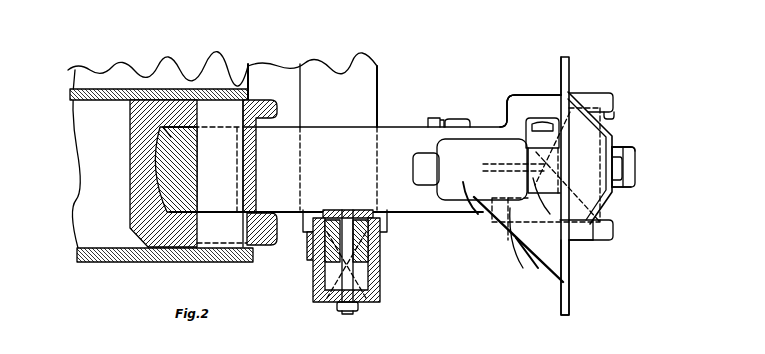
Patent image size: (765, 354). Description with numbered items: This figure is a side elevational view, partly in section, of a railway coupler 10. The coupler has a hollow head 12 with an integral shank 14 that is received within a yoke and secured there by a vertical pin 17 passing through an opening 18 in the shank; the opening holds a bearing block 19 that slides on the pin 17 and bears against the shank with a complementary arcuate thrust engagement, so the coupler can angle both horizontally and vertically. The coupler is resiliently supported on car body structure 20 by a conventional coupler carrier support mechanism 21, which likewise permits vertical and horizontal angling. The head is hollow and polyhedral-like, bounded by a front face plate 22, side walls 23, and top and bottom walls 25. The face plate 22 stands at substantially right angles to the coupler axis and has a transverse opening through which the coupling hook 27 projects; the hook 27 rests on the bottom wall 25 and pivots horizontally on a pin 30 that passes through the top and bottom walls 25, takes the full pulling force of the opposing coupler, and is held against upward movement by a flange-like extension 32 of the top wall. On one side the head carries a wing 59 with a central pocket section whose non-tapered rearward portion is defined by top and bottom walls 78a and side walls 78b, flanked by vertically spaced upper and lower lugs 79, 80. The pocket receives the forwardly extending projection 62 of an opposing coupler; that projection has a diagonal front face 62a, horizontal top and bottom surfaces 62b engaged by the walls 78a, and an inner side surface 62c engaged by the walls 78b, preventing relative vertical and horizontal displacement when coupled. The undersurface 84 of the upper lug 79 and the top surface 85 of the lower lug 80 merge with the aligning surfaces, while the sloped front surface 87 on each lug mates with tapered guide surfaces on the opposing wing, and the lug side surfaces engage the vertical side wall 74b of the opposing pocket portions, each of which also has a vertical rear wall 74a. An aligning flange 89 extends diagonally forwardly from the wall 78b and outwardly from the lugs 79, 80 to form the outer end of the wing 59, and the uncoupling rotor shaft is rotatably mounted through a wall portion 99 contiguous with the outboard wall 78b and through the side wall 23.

The coupler 10 is at (546, 64).
The hollow head 12 is at (492, 210).
The shank 14 is at (388, 128).
The vertical pin 17 is at (213, 108).
The opening 18 is at (256, 204).
The bearing block 19 is at (160, 246).
The car body structure 20 is at (377, 82).
The coupler carrier support mechanism 21 is at (382, 278).
The front face plate 22 is at (566, 71).
The side walls 23 is at (467, 200).
The top and bottom walls 25 is at (535, 86).
The coupling hook 27 is at (626, 152).
The pin 30 is at (450, 122).
The flange-like extension 32 is at (431, 118).
The wing 59 is at (518, 242).
The forwardly extending projection 62 is at (636, 160).
The front face 62a is at (629, 168).
The top and bottom surfaces 62b is at (615, 148).
The inner side surface 62c is at (620, 188).
The vertical rear wall 74a is at (520, 94).
The vertical side wall 74b is at (543, 84).
The top and bottom walls 78a is at (504, 168).
The side walls 78b is at (516, 232).
The upper lug portion 79 is at (594, 100).
The lower lug portion 80 is at (606, 245).
The undersurface 84 is at (606, 115).
The top surface 85 is at (614, 223).
The front surface 87 is at (614, 101).
The aligning flange 89 is at (578, 243).
The wall portion 99 is at (543, 118).